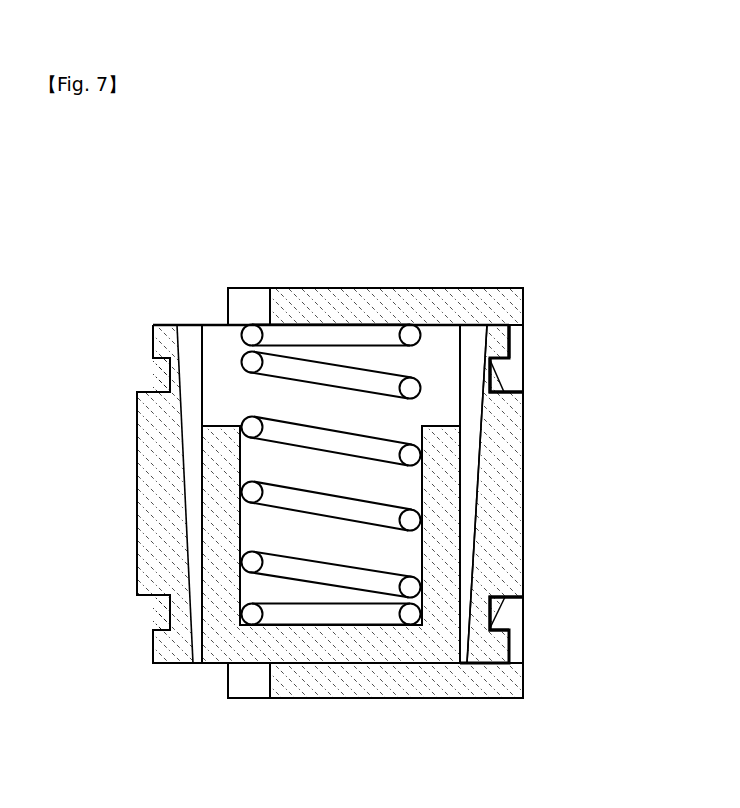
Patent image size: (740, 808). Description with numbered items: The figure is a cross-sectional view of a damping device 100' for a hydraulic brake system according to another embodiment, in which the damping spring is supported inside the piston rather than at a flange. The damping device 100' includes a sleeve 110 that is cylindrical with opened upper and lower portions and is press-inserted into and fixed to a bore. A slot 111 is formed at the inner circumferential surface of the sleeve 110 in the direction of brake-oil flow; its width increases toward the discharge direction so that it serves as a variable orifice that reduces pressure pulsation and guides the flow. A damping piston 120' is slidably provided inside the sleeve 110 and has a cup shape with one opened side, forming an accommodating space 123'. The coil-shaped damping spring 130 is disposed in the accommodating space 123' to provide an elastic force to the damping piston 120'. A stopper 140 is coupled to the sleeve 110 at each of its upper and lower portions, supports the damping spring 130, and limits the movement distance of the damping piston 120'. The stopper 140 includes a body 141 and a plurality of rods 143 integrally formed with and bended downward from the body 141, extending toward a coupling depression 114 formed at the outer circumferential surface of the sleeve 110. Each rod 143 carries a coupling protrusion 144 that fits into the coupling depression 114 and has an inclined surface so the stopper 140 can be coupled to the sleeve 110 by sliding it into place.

The damping device 100' is at (295, 447).
The sleeve 110 is at (507, 508).
The slot 111 is at (474, 411).
The coupling depression 114 is at (502, 603).
The damping piston 120' is at (331, 551).
The accommodating space 123' is at (303, 687).
The damping spring 130 is at (250, 492).
The stopper 140 is at (515, 173).
The body 141 is at (452, 303).
The rods 143 is at (522, 328).
The coupling protrusion 144 is at (502, 373).